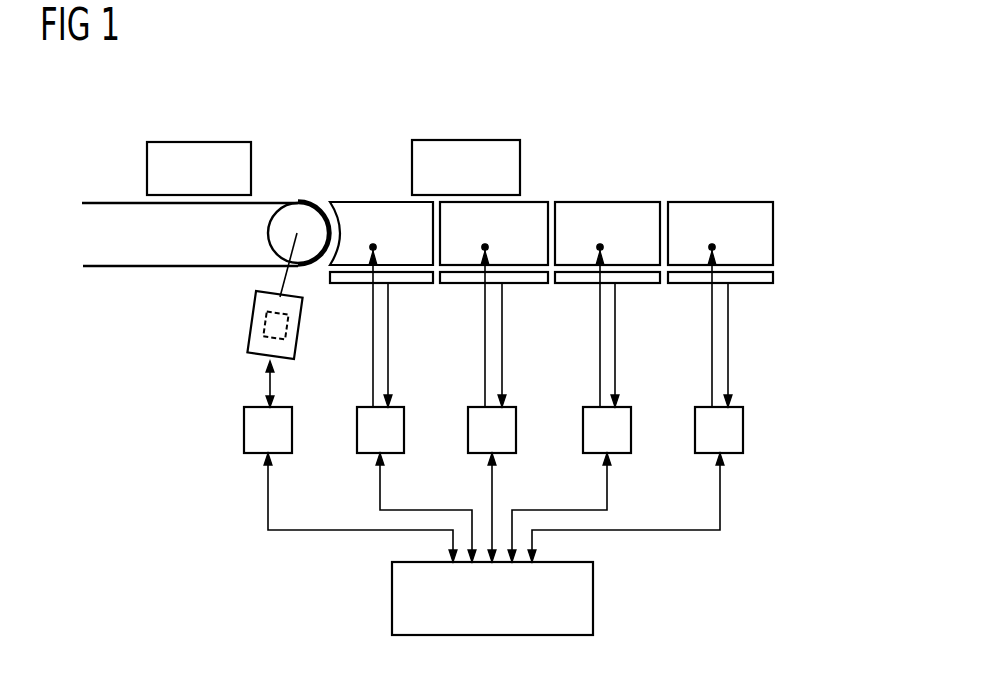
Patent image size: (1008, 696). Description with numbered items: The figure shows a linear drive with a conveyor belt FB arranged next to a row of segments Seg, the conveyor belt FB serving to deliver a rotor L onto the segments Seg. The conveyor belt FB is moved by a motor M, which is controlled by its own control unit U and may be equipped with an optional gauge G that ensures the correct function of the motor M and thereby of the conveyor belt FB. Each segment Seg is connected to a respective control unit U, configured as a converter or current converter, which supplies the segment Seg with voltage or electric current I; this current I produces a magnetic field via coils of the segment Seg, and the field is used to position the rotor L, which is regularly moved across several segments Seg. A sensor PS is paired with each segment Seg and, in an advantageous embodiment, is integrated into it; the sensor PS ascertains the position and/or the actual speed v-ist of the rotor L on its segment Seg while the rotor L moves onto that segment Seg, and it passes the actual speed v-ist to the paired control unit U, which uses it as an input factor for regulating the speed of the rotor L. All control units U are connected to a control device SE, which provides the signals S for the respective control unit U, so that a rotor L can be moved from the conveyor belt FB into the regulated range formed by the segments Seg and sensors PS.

The conveyor belt FB is at (105, 203).
The rotor L is at (190, 142).
The segment Seg is at (370, 202).
The sensor PS is at (773, 280).
The electric current I is at (372, 324).
The actual speed v-ist is at (584, 345).
The control unit U is at (292, 432).
The motor M is at (256, 311).
The gauge G is at (287, 332).
The signal S is at (270, 487).
The control device SE is at (593, 610).